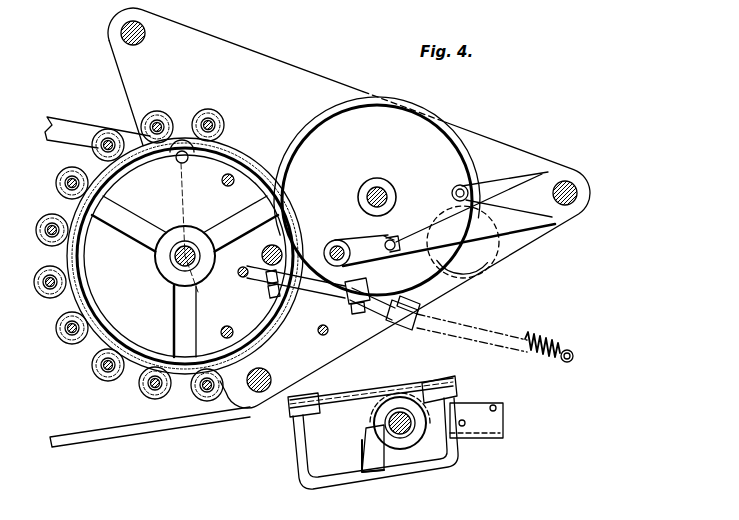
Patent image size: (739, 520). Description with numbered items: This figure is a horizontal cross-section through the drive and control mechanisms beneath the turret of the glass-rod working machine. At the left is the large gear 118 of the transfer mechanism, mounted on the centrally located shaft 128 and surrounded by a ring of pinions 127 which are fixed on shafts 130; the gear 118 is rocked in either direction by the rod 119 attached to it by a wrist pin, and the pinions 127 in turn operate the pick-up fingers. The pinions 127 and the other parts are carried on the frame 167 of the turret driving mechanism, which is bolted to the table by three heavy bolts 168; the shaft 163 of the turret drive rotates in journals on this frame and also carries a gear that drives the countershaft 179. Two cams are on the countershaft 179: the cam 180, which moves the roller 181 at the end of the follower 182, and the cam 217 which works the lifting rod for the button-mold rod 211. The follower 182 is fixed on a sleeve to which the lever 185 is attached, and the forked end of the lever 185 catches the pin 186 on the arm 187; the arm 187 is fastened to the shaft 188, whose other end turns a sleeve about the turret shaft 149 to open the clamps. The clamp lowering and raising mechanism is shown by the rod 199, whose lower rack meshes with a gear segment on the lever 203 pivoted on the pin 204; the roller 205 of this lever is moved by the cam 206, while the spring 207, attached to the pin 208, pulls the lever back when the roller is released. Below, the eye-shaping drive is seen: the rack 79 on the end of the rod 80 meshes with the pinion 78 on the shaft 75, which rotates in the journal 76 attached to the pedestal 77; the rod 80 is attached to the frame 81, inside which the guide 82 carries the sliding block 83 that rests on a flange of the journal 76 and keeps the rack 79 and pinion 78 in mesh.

The shaft 75 is at (400, 430).
The journal 76 is at (405, 430).
The pedestal 77 is at (503, 430).
The pinion 78 is at (394, 403).
The rack 79 is at (360, 402).
The rod 80 is at (107, 440).
The frame 81 is at (331, 484).
The guide 82 is at (332, 472).
The sliding block 83 is at (366, 472).
The gear 118 is at (78, 249).
The rod 119 is at (89, 128).
The pinions 127 is at (57, 184).
The shaft 128 is at (186, 250).
The shafts 130 is at (50, 296).
The vertical shaft 149 is at (263, 252).
The shaft 163 is at (397, 196).
The frame 167 is at (232, 53).
The bolts 168 is at (120, 35).
The countershaft 179 is at (505, 240).
The cam 180 is at (485, 273).
The roller 181 is at (457, 188).
The follower 182 is at (499, 188).
The lever 185 is at (556, 223).
The pin 186 is at (389, 251).
The arm 187 is at (371, 240).
The shaft 188 is at (337, 240).
The rod 199 is at (241, 277).
The lever 203 is at (373, 318).
The pin 204 is at (435, 311).
The roller 205 is at (345, 291).
The cam 206 is at (441, 116).
The spring 207 is at (543, 356).
The pin 208 is at (575, 356).
The rod 211 is at (323, 336).
The cam 217 is at (497, 263).